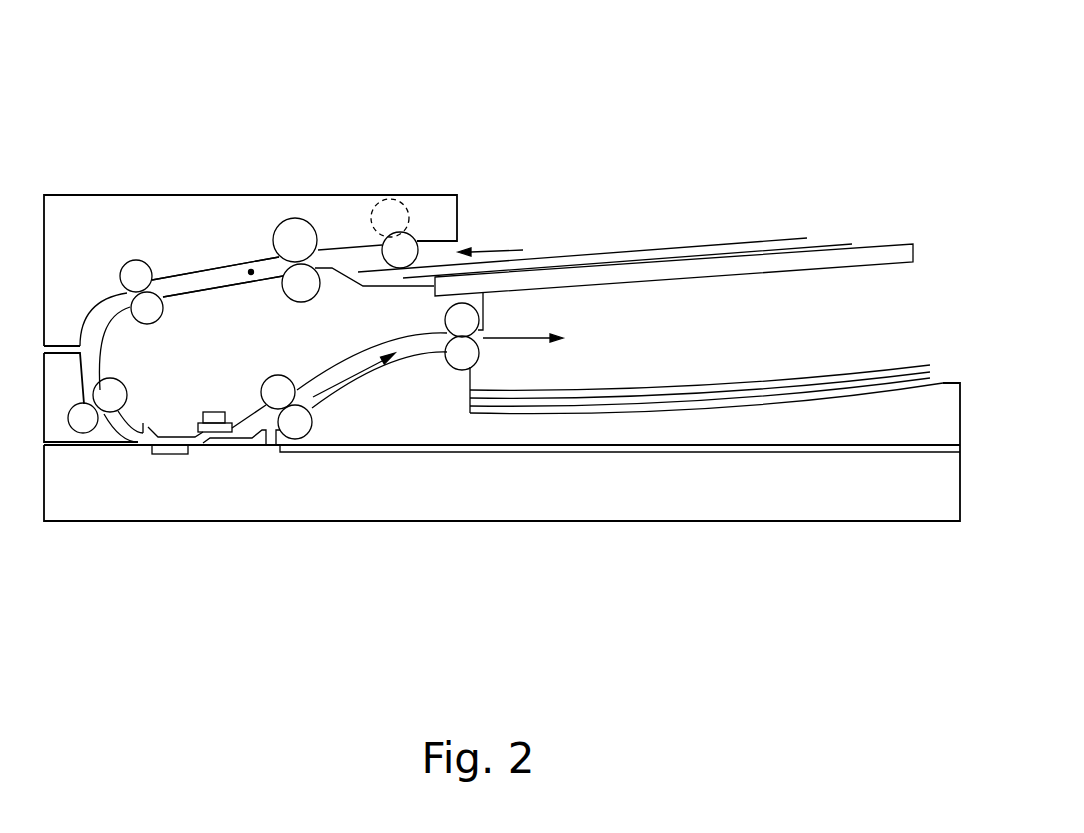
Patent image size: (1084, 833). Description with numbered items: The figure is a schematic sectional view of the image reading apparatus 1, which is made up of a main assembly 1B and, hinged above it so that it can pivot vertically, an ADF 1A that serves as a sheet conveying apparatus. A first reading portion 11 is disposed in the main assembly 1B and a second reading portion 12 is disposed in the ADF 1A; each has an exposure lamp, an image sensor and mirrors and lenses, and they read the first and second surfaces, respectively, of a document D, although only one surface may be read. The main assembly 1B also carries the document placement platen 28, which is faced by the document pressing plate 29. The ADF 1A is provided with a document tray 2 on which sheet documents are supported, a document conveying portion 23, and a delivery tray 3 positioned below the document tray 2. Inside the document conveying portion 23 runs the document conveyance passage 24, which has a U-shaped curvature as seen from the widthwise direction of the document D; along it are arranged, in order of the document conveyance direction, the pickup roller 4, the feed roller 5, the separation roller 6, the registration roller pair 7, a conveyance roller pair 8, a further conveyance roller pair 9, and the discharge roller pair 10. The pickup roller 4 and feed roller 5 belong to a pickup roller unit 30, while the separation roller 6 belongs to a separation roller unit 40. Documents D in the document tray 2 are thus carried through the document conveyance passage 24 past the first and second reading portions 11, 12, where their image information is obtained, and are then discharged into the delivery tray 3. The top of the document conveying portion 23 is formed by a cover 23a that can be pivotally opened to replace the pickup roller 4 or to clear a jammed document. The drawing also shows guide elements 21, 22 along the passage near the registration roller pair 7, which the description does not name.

The image reading apparatus 1 is at (602, 153).
The ADF 1A is at (472, 183).
The main assembly 1B is at (473, 544).
The document tray 2 is at (827, 270).
The delivery tray 3 is at (945, 390).
The pickup roller 4 is at (378, 240).
The feed roller 5 is at (307, 218).
The separation roller 6 is at (320, 293).
The registration roller pair 7 is at (124, 261).
The conveyance roller pair 8 is at (67, 430).
The conveyance roller pair 9 is at (278, 375).
The discharge roller pair 10 is at (445, 364).
The first reading portion 11 is at (175, 454).
The second reading portion 12 is at (212, 412).
The upper guide 21 is at (217, 265).
The lower guide 22 is at (188, 288).
The document conveying portion 23 is at (246, 106).
The cover 23a is at (92, 195).
The document conveyance passage 24 is at (251, 272).
The document placement platen 28 is at (622, 452).
The document pressing plate 29 is at (692, 445).
The pickup roller unit 30 is at (388, 175).
The separation roller unit 40 is at (259, 296).
The document D is at (652, 254).